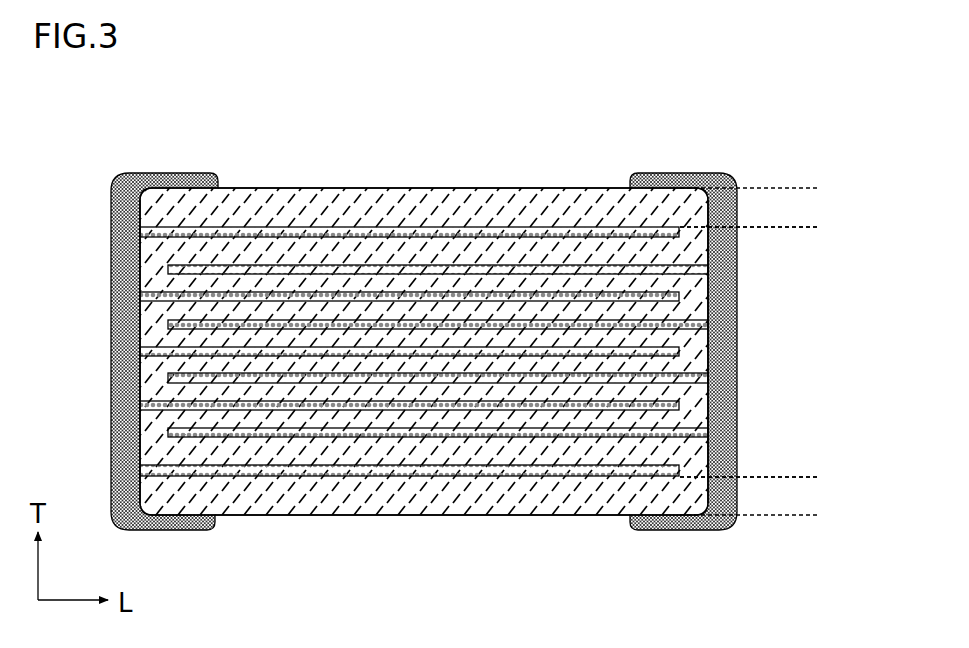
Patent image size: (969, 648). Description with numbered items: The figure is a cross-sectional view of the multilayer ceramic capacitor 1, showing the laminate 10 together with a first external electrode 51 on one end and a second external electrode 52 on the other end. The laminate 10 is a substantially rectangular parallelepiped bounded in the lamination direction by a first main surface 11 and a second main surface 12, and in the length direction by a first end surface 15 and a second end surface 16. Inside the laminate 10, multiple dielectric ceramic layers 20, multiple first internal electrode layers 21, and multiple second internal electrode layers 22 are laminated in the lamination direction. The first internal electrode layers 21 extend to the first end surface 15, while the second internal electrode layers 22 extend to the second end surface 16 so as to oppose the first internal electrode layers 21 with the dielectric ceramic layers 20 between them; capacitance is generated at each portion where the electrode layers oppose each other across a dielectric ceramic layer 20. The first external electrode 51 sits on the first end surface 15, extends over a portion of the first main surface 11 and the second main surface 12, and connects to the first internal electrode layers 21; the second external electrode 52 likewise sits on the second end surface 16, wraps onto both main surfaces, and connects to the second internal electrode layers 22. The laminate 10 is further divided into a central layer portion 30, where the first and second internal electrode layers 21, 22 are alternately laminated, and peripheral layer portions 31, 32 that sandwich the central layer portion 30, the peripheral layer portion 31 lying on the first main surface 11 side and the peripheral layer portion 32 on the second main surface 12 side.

The multilayer ceramic capacitor 1 is at (86, 128).
The laminate 10 is at (545, 185).
The first main surface 11 is at (255, 188).
The second main surface 12 is at (584, 515).
The first end surface 15 is at (137, 381).
The second end surface 16 is at (712, 407).
The dielectric ceramic layer 20 is at (378, 393).
The first internal electrode layer 21 is at (365, 350).
The second internal electrode layer 22 is at (475, 323).
The central layer portion 30 is at (820, 227).
The peripheral layer portion 31 is at (820, 188).
The peripheral layer portion 32 is at (820, 477).
The first external electrode 51 is at (122, 223).
The second external electrode 52 is at (683, 178).